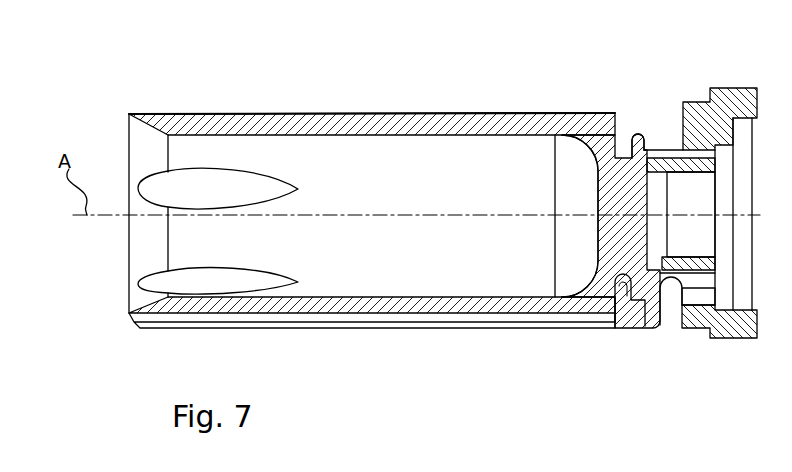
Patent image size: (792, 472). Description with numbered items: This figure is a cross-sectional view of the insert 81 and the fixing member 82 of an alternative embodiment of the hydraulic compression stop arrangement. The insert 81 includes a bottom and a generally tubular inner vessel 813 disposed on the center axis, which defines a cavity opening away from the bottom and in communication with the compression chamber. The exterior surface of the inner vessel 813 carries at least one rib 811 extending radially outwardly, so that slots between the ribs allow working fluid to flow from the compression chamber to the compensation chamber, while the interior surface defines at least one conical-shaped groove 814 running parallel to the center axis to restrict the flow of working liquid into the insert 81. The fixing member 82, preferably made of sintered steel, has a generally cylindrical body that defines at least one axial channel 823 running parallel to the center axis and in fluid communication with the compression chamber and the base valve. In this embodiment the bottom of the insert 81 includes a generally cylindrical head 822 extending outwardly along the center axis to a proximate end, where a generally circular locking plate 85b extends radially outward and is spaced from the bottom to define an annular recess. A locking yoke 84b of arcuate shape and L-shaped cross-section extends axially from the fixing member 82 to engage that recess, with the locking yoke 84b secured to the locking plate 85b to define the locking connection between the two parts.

The insert 81 is at (444, 318).
The rib 811 is at (513, 322).
The inner vessel 813 is at (361, 262).
The groove 814 is at (222, 280).
The fixing member 82 is at (670, 320).
The head 822 is at (685, 165).
The axial channel 823 is at (697, 298).
The locking yoke 84b is at (644, 302).
The locking plate 85b is at (638, 148).